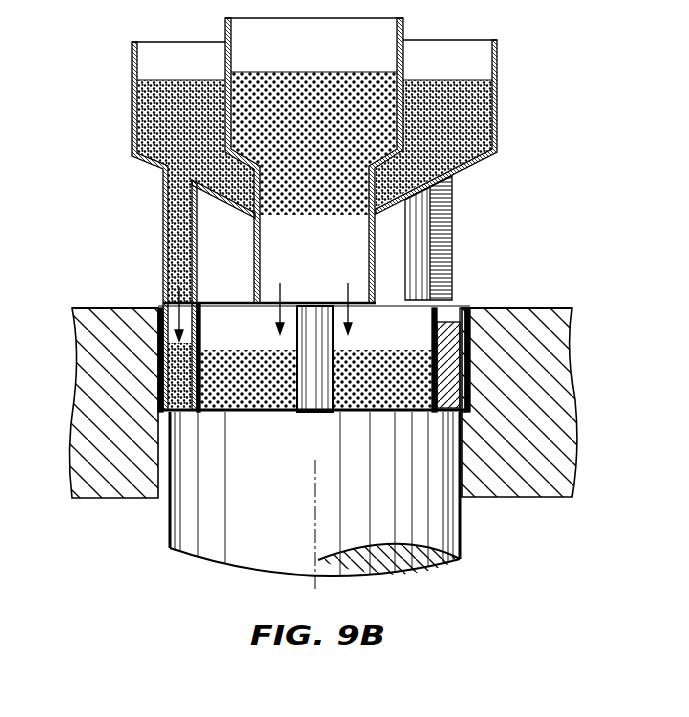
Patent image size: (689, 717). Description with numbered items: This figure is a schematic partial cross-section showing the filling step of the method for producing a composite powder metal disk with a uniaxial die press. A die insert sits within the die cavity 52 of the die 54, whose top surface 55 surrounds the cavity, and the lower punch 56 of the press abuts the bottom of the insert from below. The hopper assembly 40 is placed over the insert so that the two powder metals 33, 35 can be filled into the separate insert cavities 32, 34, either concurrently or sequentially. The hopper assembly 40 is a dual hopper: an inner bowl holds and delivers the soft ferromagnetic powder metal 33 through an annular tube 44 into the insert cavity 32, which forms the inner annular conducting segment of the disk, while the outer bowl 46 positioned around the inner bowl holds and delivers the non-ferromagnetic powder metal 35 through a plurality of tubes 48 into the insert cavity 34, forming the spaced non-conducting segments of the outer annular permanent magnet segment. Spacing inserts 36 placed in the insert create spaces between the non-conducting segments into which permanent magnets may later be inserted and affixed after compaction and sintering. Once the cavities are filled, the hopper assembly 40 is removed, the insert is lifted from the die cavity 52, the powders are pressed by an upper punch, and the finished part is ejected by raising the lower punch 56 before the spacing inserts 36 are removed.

The insert cavity 32 is at (267, 413).
The powder metal 33 is at (316, 86).
The insert cavity 34 is at (160, 310).
The powder metal 35 is at (148, 113).
The spacing insert 36 is at (450, 315).
The hopper assembly 40 is at (499, 48).
The annular tube 44 is at (258, 262).
The outer bowl 46 is at (498, 115).
The tube 48 is at (163, 230).
The die cavity 52 is at (158, 330).
The die 54 is at (550, 383).
The top surface 55 is at (532, 308).
The lower punch 56 is at (274, 526).